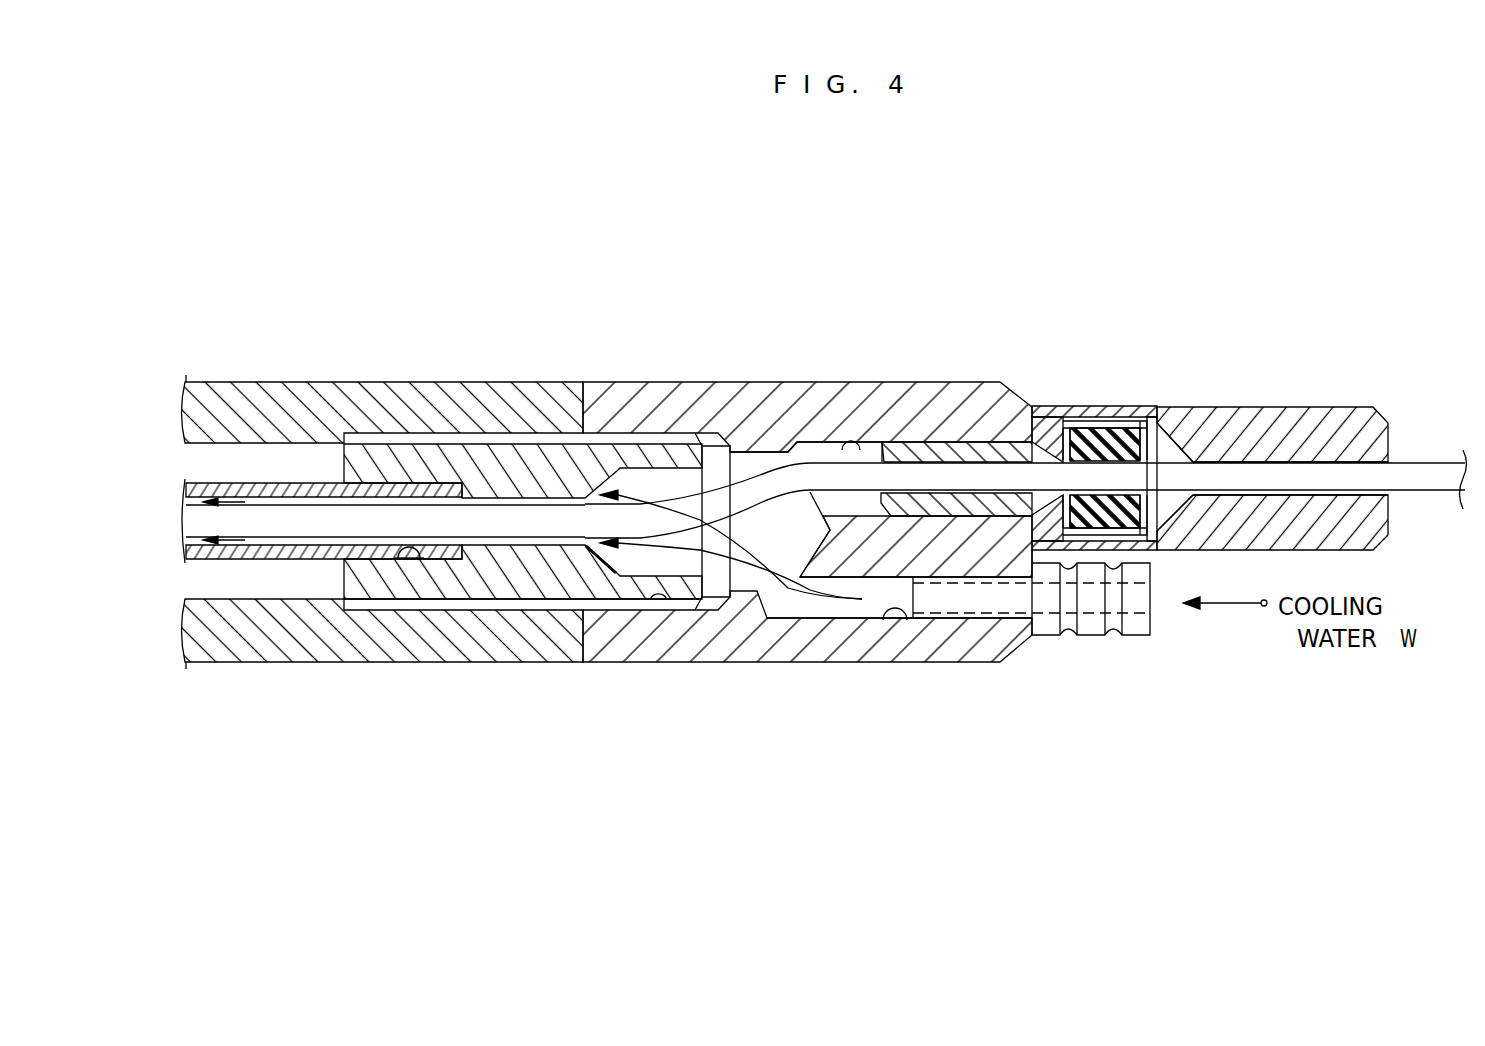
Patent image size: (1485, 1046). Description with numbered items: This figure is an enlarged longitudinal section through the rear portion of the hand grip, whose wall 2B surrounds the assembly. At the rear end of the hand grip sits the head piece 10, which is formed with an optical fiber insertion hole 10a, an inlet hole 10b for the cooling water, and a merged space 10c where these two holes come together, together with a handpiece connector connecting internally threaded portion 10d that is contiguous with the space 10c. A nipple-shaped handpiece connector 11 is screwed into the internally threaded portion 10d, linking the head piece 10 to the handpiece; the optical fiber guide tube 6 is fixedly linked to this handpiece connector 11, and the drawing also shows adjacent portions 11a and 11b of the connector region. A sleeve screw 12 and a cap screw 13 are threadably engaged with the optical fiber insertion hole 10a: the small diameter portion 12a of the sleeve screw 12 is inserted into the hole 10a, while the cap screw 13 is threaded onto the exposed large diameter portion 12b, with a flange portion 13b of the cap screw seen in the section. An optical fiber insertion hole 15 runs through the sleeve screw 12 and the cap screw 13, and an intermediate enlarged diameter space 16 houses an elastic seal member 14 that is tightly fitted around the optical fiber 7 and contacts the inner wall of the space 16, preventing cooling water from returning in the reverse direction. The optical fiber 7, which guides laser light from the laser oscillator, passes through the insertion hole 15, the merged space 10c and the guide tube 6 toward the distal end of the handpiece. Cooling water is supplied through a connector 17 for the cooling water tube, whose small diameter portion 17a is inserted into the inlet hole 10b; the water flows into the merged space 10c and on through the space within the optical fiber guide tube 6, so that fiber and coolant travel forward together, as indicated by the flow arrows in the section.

The torch body 2B is at (423, 392).
The optical fiber guide tube 6 is at (262, 484).
The optical fiber 7 is at (1436, 470).
The head piece 10 is at (812, 382).
The optical fiber insertion hole 10a is at (853, 441).
The inlet hole of the cooling water 10b is at (900, 621).
The merged space 10c is at (762, 546).
The handpiece connector connecting internally threaded portion 10d is at (657, 602).
The handpiece connector 11 is at (502, 583).
The seal 11a is at (416, 560).
The sleeve outer surface 11b is at (457, 601).
The sleeve screw 12 is at (1004, 448).
The small diameter portion 12a is at (970, 443).
The large diameter portion 12b is at (1053, 407).
The cap screw 13 is at (1256, 406).
The flange plate 13b is at (1137, 418).
The elastic seal member 14 is at (1138, 503).
The optical fiber insertion hole 15 is at (1290, 468).
The intermediate enlarged diameter space 16 is at (1167, 497).
The connector for the cooling water tube 17 is at (1087, 636).
The small diameter portion 17a is at (1007, 605).